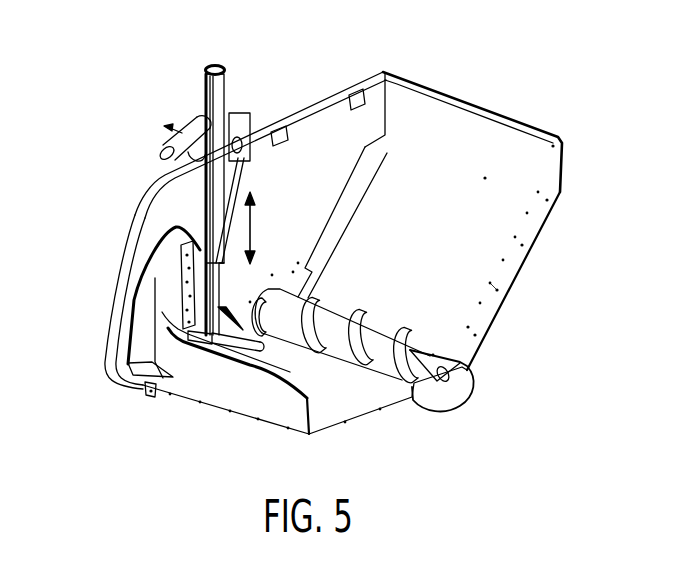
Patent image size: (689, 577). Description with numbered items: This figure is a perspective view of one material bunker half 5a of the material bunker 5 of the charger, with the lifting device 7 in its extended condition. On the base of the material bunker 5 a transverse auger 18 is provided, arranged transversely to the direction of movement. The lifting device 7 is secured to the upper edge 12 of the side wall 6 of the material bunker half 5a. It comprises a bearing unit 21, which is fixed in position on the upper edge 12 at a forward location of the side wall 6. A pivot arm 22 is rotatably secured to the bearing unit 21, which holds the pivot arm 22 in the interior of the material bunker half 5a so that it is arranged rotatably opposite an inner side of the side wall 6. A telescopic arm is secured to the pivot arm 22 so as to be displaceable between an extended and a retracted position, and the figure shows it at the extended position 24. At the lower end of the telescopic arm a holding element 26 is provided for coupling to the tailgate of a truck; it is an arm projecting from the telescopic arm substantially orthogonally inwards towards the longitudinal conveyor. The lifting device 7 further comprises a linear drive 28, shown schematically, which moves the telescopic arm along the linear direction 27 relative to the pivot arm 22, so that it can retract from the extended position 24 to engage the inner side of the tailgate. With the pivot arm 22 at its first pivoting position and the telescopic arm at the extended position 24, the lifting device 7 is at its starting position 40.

The material bunker 5 is at (520, 120).
The material bunker half 5a is at (432, 257).
The side wall 6 is at (326, 127).
The lifting device 7 is at (182, 100).
The upper edge 12 is at (345, 82).
The transverse auger 18 is at (381, 358).
The bearing unit 21 is at (182, 133).
The pivot arm 22 is at (226, 87).
The extended position 24 is at (194, 322).
The holding element 26 is at (236, 339).
The linear direction 27 is at (252, 222).
The linear drive 28 is at (250, 112).
The starting position 40 is at (193, 216).